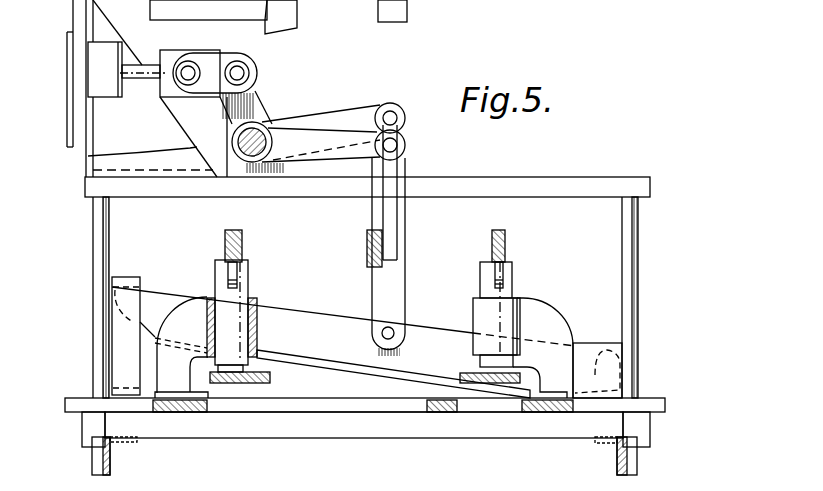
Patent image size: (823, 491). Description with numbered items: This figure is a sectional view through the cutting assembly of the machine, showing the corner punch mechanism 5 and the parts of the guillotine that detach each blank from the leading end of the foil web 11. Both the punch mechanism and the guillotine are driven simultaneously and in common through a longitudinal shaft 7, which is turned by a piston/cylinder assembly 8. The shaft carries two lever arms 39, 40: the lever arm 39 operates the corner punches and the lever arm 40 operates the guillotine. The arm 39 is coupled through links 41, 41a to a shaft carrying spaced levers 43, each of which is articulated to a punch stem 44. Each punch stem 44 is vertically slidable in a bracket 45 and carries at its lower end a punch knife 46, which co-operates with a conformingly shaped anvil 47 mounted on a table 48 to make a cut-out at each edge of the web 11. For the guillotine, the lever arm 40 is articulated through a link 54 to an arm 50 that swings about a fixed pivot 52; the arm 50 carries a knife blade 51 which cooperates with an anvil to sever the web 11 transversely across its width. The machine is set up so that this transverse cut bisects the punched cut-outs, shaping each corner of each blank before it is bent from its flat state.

The corner punch mechanism 5 is at (462, 317).
The longitudinal shaft 7 is at (258, 135).
The piston/cylinder assembly 8 is at (107, 50).
The foil web 11 is at (357, 396).
The lever arm 39 is at (333, 146).
The lever arm 40 is at (348, 110).
The link 41 is at (390, 218).
The link 41a is at (367, 242).
The lever 43 is at (243, 245).
The punch stem 44 is at (242, 288).
The bracket 45 is at (193, 313).
The punch knife 46 is at (270, 377).
The anvil 47 is at (290, 413).
The table 48 is at (547, 428).
The arm 50 is at (308, 322).
The knife blade 51 is at (407, 375).
The fixed pivot 52 is at (597, 372).
The link 54 is at (388, 289).